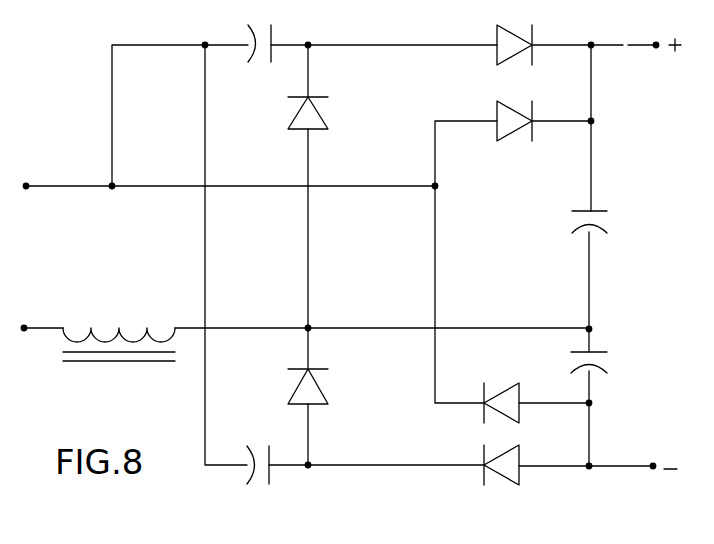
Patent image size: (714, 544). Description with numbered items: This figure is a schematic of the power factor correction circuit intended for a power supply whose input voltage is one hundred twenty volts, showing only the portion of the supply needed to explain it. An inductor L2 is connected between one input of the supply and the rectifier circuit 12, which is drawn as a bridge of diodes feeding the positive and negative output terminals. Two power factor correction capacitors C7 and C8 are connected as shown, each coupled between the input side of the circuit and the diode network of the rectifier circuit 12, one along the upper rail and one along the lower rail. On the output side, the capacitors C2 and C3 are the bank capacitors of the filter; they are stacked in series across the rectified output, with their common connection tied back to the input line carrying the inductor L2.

The rectifier circuit 12 is at (380, 270).
The power factor correction capacitor C7 is at (259, 33).
The power factor correction capacitor C8 is at (257, 480).
The bank capacitor C2 is at (604, 222).
The bank capacitor C3 is at (603, 362).
The inductor L2 is at (119, 362).